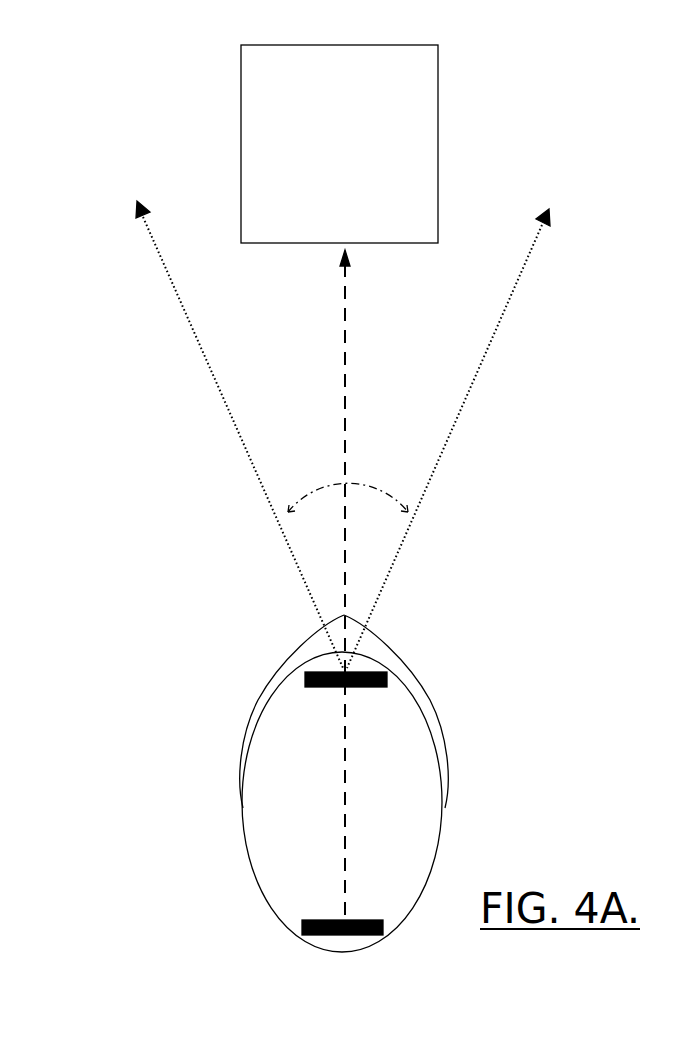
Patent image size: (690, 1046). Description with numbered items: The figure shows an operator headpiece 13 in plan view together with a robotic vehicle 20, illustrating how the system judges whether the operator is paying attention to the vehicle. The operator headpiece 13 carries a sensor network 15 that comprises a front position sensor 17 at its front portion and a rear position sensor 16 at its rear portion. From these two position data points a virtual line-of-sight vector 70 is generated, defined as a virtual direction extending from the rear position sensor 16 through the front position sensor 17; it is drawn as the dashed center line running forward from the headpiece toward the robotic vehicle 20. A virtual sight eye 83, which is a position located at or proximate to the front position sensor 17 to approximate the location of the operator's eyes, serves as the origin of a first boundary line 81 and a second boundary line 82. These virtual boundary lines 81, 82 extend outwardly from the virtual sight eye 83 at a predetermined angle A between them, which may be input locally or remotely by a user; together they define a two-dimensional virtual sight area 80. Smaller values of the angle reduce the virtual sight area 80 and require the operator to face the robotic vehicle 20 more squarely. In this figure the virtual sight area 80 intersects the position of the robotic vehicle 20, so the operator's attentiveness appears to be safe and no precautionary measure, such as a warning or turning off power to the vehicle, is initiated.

The robotic vehicle 20 is at (437, 93).
The virtual line-of-sight vector 70 is at (350, 393).
The virtual sight area 80 is at (404, 299).
The first boundary line 81 is at (207, 370).
The second boundary line 82 is at (438, 457).
The virtual sight eye 83 is at (346, 657).
The operator headpiece 13 is at (242, 807).
The front position sensor 17 is at (305, 680).
The rear position sensor 16 is at (303, 923).
The sensor network 15 is at (674, 630).